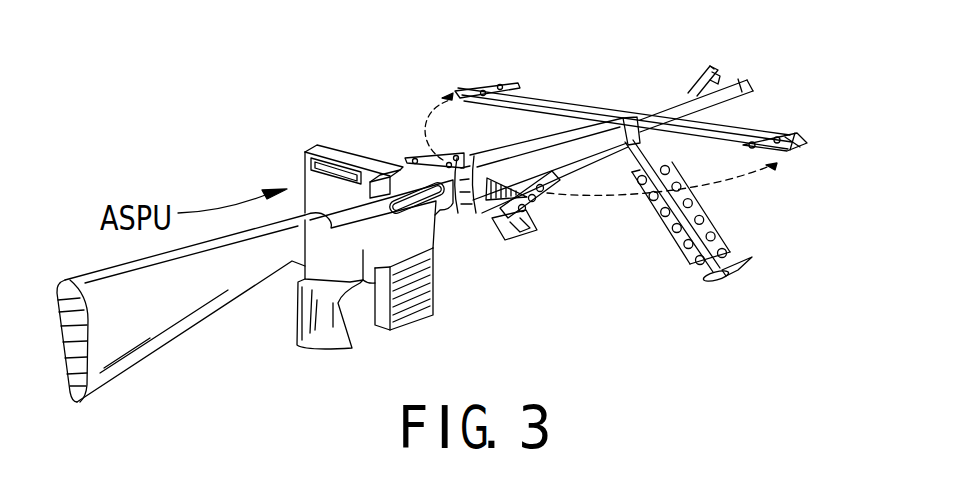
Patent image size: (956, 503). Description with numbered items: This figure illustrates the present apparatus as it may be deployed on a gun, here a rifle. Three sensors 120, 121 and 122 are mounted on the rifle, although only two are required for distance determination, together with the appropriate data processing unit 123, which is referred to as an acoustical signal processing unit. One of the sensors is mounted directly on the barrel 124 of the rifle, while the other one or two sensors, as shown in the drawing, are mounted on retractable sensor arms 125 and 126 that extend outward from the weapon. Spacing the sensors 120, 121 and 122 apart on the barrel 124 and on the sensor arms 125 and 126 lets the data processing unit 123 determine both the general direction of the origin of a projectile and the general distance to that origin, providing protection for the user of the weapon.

The sensor 120 is at (482, 178).
The sensor 121 is at (480, 85).
The sensor 122 is at (797, 153).
The data processing unit 123 is at (303, 162).
The barrel 124 is at (560, 165).
The retractable sensor arm 125 is at (582, 99).
The retractable sensor arm 126 is at (745, 135).